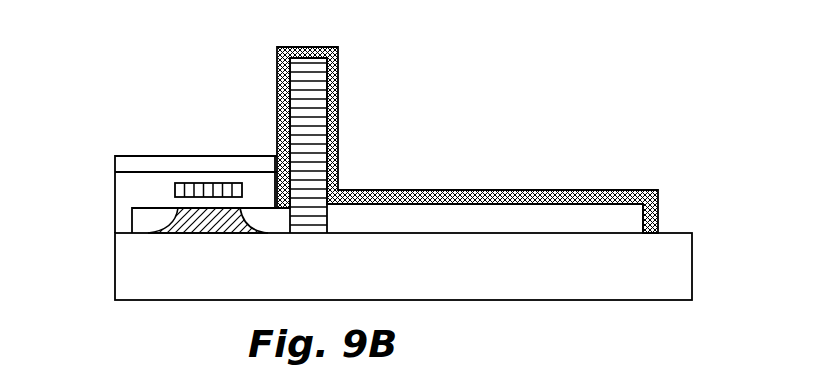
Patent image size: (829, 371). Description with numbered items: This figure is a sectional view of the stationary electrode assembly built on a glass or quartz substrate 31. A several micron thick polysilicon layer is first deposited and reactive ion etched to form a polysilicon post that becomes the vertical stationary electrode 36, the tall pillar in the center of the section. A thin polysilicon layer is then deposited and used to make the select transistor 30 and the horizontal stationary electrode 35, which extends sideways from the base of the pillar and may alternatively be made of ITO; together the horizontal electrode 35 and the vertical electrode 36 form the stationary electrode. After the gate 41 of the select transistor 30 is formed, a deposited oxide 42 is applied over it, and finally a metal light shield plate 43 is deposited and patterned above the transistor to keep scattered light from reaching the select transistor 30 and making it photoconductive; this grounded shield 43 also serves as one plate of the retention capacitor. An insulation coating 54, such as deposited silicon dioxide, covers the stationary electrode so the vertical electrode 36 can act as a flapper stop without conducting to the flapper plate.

The select transistor 30 is at (202, 208).
The substrate 31 is at (677, 240).
The horizontal stationary electrode 35 is at (542, 213).
The vertical stationary electrode 36 is at (338, 160).
The gate 41 is at (229, 182).
The deposited oxide 42 is at (127, 188).
The metal light shield plate 43 is at (145, 158).
The insulation coating 54 is at (340, 90).